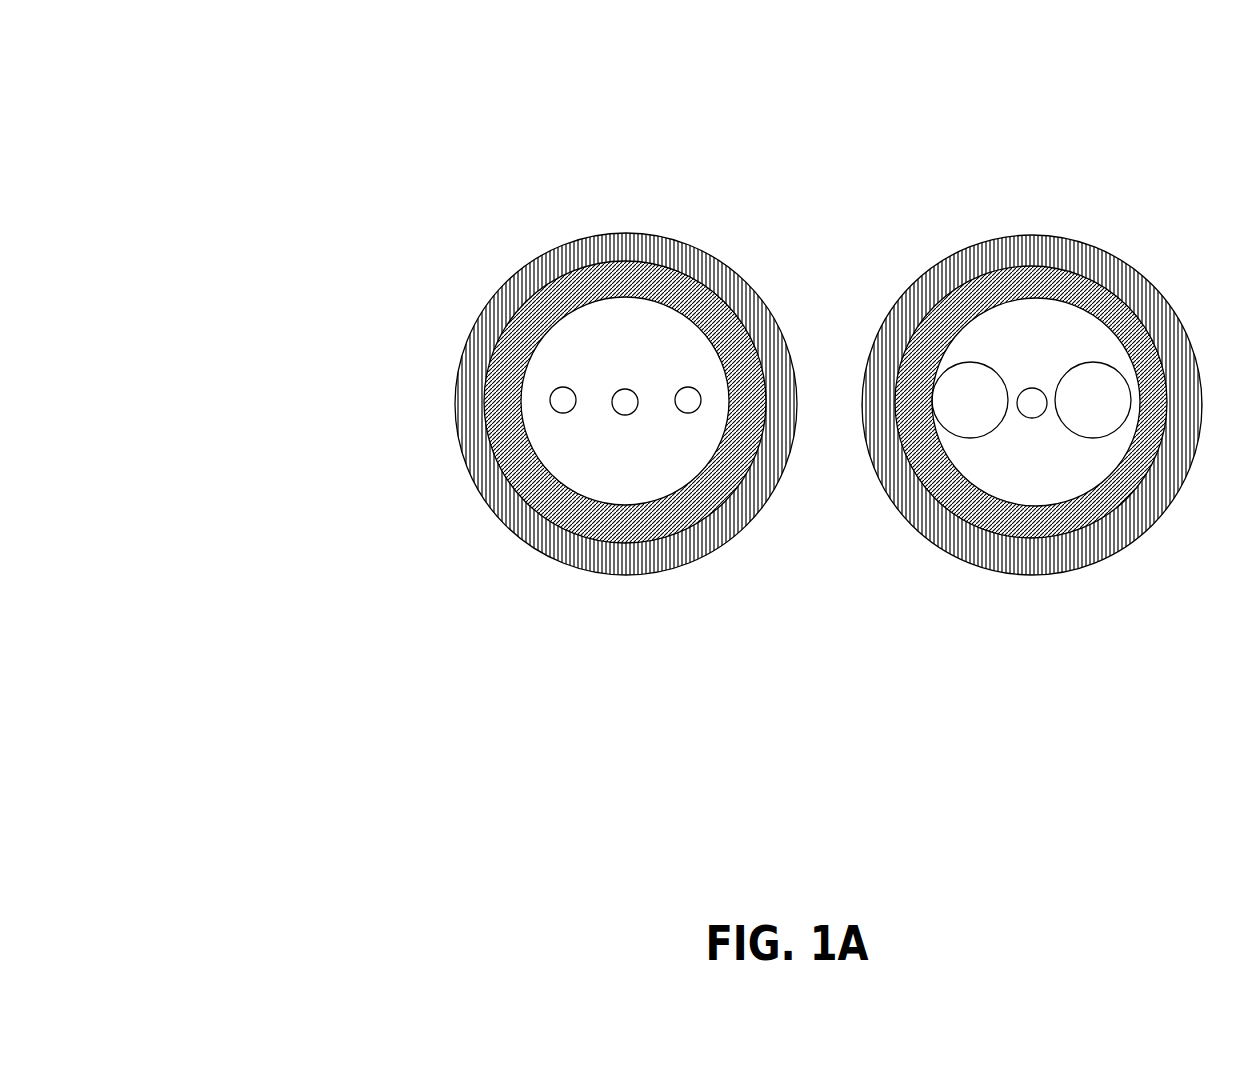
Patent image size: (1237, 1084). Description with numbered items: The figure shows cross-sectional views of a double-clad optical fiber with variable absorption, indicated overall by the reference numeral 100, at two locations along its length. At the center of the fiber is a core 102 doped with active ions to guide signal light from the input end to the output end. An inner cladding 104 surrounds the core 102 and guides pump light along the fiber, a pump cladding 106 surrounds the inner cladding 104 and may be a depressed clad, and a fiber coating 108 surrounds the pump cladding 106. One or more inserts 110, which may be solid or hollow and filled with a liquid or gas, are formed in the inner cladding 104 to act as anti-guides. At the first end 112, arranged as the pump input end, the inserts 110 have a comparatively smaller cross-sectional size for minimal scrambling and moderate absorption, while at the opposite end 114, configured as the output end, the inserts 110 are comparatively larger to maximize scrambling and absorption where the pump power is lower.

The medical tubing assembly 100 is at (296, 64).
The core 102 is at (604, 415).
The inner cladding 104 is at (548, 502).
The pump cladding 106 is at (587, 550).
The fiber coating 108 is at (619, 592).
The inserts 110 is at (670, 374).
The first end 112 is at (615, 220).
The opposite end 114 is at (1027, 220).